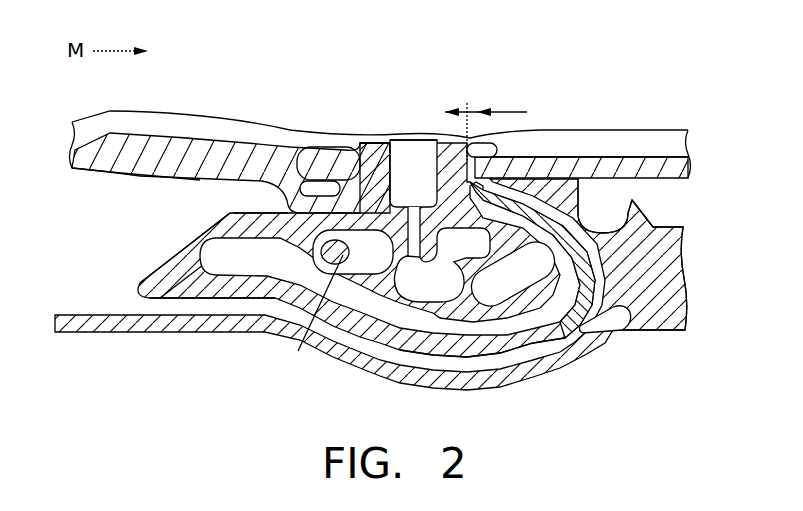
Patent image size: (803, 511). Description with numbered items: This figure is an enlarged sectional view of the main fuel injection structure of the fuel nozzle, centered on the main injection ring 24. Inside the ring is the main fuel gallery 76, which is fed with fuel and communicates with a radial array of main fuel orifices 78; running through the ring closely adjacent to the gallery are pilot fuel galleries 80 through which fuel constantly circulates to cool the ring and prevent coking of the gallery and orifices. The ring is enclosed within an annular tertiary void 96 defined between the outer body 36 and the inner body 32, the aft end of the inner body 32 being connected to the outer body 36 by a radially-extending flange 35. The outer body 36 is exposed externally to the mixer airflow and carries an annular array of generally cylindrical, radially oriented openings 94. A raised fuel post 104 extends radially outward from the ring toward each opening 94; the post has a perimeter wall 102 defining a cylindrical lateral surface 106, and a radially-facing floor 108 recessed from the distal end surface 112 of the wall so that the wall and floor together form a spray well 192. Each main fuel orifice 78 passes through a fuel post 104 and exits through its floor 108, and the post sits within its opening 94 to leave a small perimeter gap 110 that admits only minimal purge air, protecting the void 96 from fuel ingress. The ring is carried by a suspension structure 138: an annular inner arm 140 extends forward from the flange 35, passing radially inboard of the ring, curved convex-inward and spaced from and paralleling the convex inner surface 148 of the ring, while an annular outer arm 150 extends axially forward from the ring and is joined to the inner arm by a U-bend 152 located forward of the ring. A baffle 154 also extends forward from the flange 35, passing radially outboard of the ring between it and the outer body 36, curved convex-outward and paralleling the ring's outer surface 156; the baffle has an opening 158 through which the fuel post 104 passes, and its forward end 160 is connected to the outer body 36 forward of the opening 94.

The main injection ring 24 is at (548, 315).
The inner body 32 is at (92, 322).
The flange 35 is at (657, 247).
The outer body 36 is at (97, 163).
The main fuel gallery 76 is at (478, 258).
The main fuel orifices 78 is at (398, 242).
The pilot fuel galleries 80 is at (528, 284).
The openings 94 is at (470, 137).
The void 96 is at (110, 204).
The perimeter wall 102 is at (377, 150).
The fuel posts 104 is at (419, 106).
The cylindrical lateral surface 106 is at (356, 148).
The floor 108 is at (404, 145).
The perimeter gap 110 is at (508, 112).
The distal end surface 112 is at (423, 137).
The suspension structure 138 is at (132, 241).
The inner arm 140 is at (510, 343).
The inner surface 148 is at (467, 334).
The outer arm 150 is at (243, 216).
The U-bend 152 is at (178, 260).
The baffle 154 is at (636, 206).
The outer surface 156 is at (545, 213).
The opening 158 is at (540, 160).
The forward end 160 is at (318, 196).
The spray well 192 is at (406, 146).